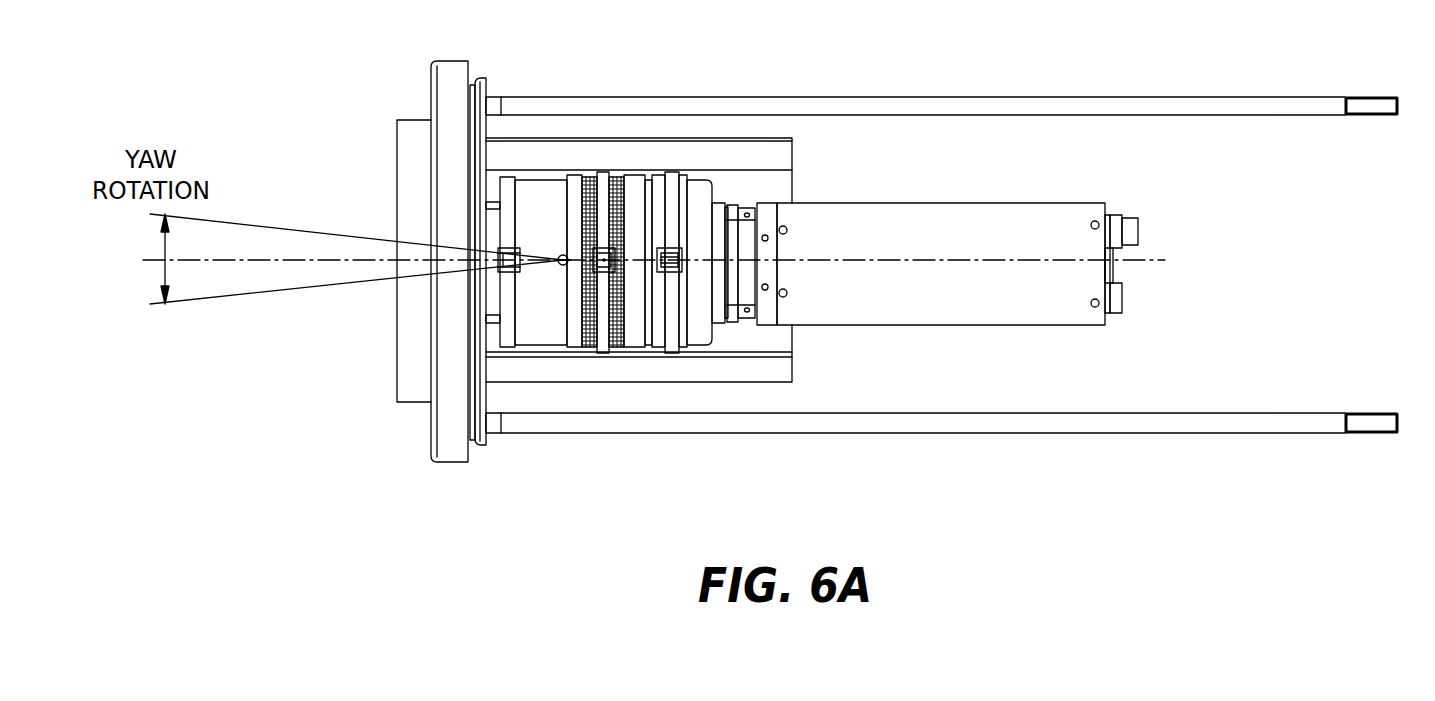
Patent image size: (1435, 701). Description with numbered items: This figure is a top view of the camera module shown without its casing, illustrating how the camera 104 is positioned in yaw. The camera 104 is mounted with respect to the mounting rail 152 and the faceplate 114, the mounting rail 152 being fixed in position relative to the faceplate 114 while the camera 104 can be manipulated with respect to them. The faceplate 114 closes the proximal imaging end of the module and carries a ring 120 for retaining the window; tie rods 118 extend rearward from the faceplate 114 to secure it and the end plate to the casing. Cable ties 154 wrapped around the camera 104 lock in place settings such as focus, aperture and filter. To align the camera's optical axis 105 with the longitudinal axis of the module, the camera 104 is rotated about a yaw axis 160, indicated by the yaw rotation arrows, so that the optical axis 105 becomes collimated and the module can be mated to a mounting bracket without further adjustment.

The camera 104 is at (1025, 237).
The optical axis 105 is at (291, 259).
The faceplate 114 is at (450, 463).
The tie rods 118 is at (1012, 103).
The ring 120 is at (407, 383).
The mounting rail 152 is at (787, 153).
The cable ties 154 is at (670, 172).
The yaw axis 160 is at (561, 257).